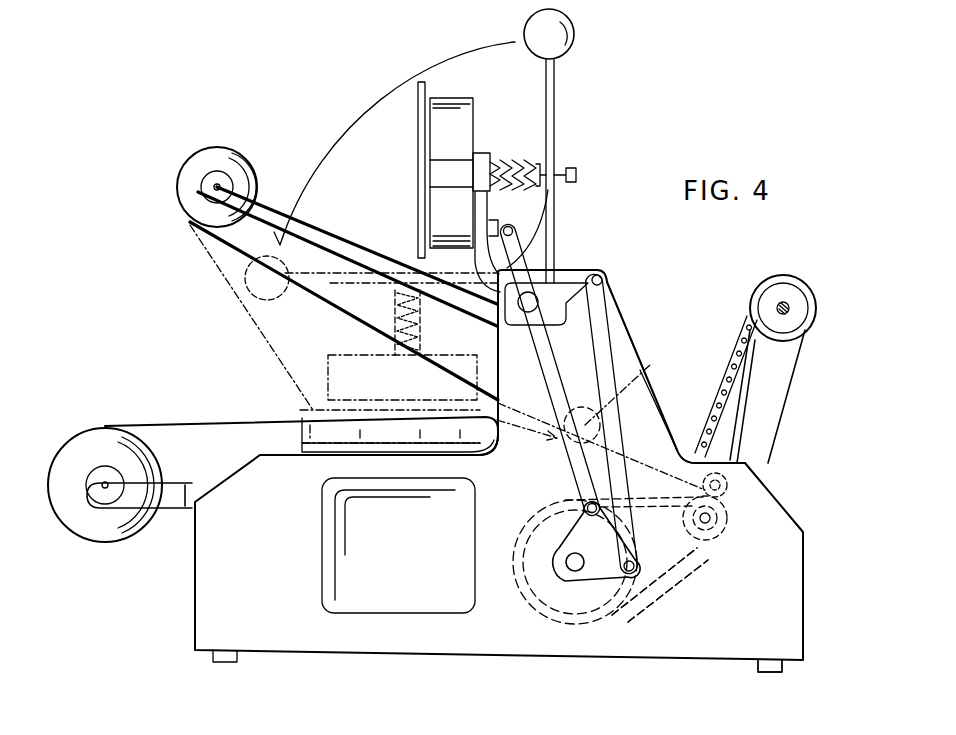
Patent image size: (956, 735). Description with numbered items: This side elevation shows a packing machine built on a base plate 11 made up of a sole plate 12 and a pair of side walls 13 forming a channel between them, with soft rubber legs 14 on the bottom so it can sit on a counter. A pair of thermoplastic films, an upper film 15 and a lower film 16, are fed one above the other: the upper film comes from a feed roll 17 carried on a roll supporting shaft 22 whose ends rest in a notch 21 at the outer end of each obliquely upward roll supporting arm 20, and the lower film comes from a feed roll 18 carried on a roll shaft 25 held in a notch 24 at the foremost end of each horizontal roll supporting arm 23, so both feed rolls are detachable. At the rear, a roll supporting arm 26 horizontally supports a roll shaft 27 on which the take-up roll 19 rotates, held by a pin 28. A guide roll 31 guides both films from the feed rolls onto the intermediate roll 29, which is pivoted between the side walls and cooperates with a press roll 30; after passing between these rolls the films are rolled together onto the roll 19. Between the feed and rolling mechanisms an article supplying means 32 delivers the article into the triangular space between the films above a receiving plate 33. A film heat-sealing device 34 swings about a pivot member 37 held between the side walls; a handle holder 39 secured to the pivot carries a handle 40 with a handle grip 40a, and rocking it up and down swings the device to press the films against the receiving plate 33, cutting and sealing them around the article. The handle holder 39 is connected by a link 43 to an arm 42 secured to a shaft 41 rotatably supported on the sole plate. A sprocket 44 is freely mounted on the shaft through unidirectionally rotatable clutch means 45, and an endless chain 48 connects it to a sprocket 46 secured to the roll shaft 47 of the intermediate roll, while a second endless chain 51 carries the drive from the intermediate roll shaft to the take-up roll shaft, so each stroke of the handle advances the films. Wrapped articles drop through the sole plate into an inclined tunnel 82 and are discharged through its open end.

The base plate 11 is at (181, 599).
The sole plate 12 is at (307, 637).
The side walls 13 is at (585, 343).
The rubber legs 14 is at (770, 673).
The upper film 15 is at (233, 245).
The lower film 16 is at (198, 418).
The feed roll 17 is at (215, 150).
The feed roll 18 is at (95, 440).
The roll 19 is at (790, 300).
The roll supporting arms 20 is at (333, 245).
The notch 21 is at (216, 189).
The roll supporting shaft 22 is at (219, 186).
The roll supporting arms 23 is at (176, 508).
The notch 24 is at (105, 490).
The roll shaft 25 is at (106, 483).
The roll supporting arm 26 is at (762, 427).
The roll shaft 27 is at (780, 300).
The pin 28 is at (777, 308).
The intermediate roll 29 is at (692, 550).
The press roll 30 is at (702, 445).
The guide roll 31 is at (607, 403).
The article supplying means 32 is at (319, 367).
The receiving plate 33 is at (300, 434).
The film heat-sealing device 34 is at (487, 131).
The pivot member 37 is at (525, 315).
The handle holder 39 is at (560, 285).
The handle 40 is at (556, 105).
The handle grip 40a is at (576, 33).
The shaft 41 is at (573, 572).
The arm 42 is at (602, 578).
The link 43 is at (607, 357).
The sprocket 44 is at (533, 598).
The unidirectionally rotatable clutch means 45 is at (540, 560).
The sprocket 46 is at (717, 533).
The roll shaft 47 is at (708, 518).
The endless chain 48 is at (643, 590).
The endless chain 51 is at (728, 377).
The inclined tunnel 82 is at (405, 600).